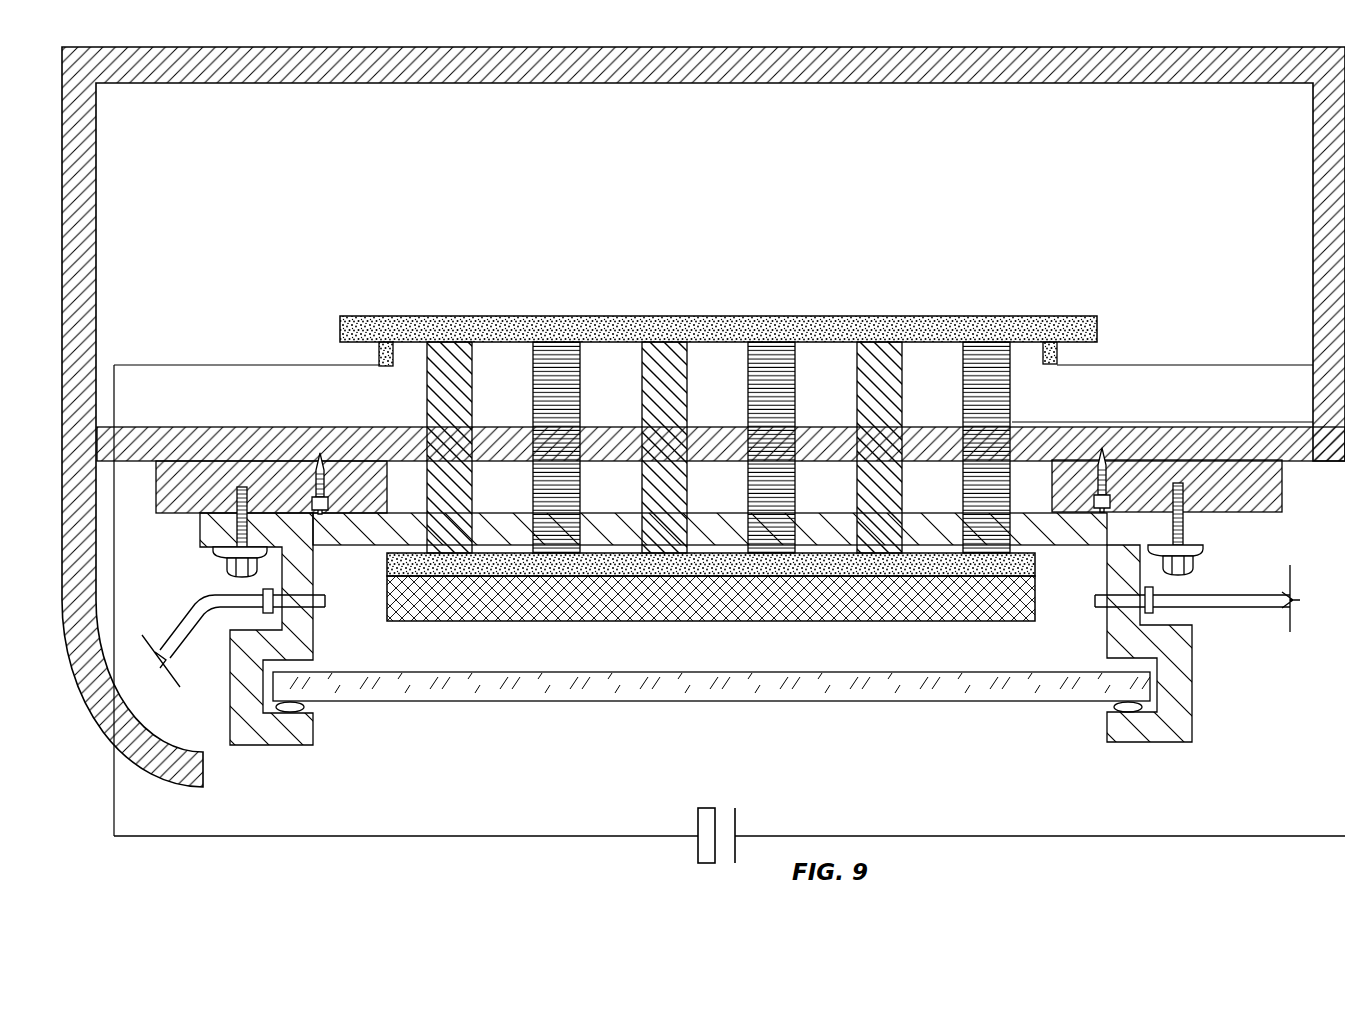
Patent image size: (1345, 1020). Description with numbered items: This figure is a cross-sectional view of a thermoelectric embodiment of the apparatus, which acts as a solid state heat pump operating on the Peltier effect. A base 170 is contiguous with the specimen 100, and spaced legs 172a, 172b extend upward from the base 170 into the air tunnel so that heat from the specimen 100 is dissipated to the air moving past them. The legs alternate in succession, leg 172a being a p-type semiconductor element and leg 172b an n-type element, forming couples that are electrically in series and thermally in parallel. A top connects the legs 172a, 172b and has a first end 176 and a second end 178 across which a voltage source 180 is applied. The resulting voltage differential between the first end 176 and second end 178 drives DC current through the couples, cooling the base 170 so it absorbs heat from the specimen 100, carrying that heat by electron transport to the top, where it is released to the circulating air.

The leg 172a is at (471, 366).
The leg 172b is at (579, 366).
The first end 176 is at (386, 368).
The second end 178 is at (1050, 366).
The base 170 is at (1033, 559).
The specimen 100 is at (1002, 618).
The voltage source 180 is at (737, 823).